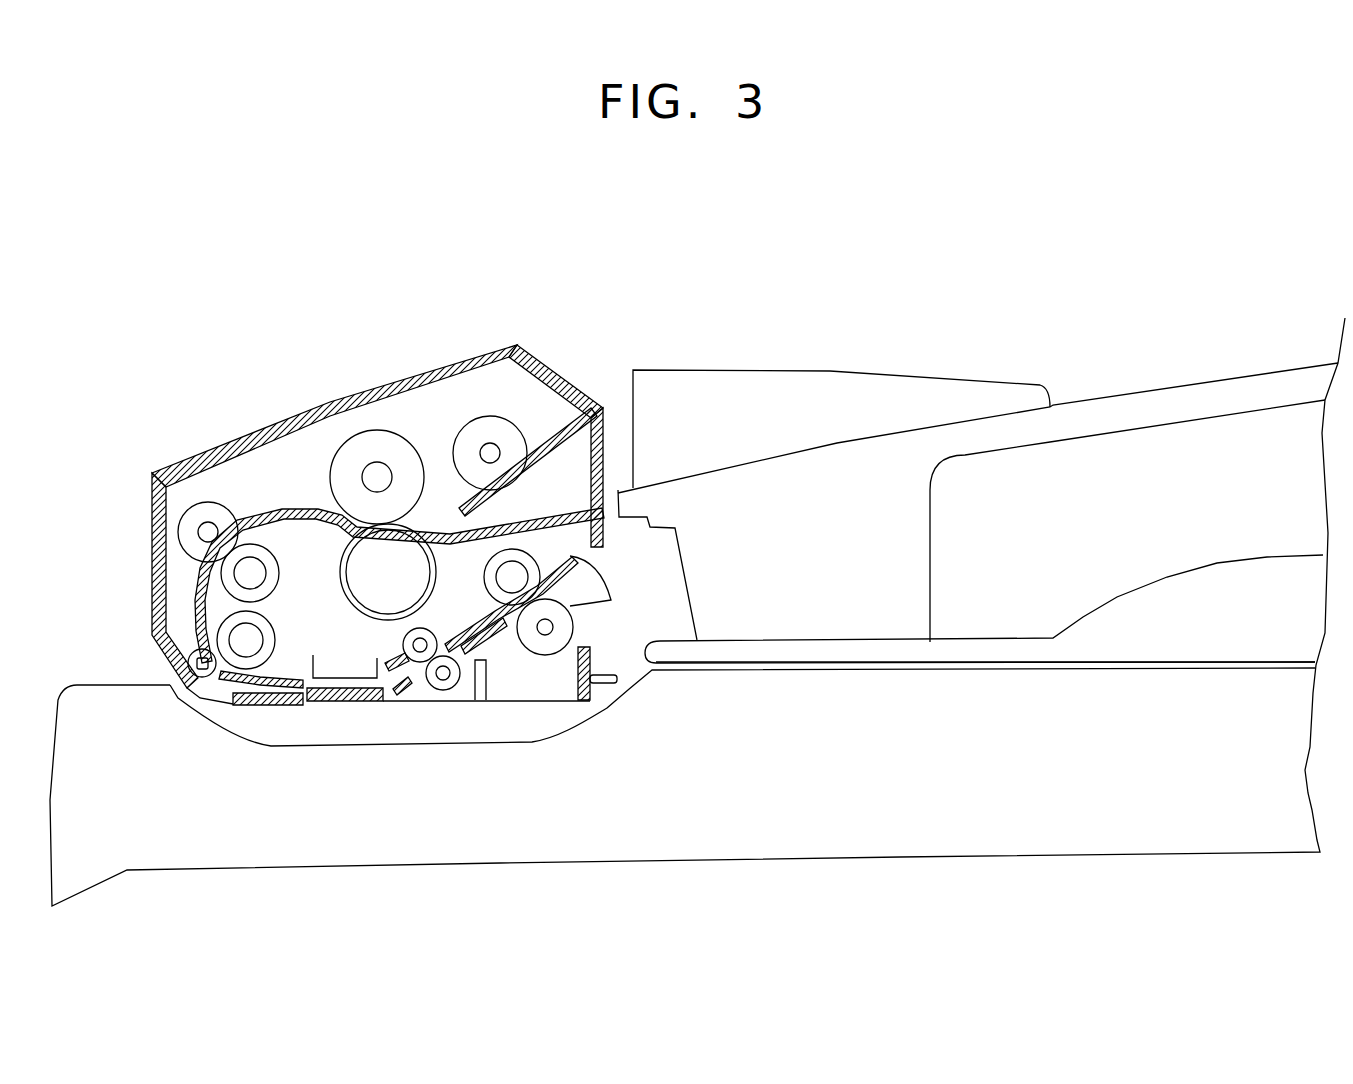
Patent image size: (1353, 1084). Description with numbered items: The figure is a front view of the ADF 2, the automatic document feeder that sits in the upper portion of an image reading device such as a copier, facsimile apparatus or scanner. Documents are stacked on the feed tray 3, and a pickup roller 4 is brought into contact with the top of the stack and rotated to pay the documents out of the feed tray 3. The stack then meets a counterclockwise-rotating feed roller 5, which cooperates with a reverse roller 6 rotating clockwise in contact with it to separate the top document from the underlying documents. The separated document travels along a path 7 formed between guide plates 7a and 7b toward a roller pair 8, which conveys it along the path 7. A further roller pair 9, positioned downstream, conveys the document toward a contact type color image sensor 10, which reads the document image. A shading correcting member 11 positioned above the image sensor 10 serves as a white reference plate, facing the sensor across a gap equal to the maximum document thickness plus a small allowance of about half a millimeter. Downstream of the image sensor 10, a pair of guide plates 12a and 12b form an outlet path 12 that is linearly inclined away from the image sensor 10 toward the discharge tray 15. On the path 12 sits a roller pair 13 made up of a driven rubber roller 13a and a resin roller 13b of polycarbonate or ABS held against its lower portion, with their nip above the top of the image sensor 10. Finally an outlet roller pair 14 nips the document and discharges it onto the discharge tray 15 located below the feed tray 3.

The ADF 2 is at (1027, 318).
The feed tray 3 is at (748, 463).
The pickup roller 4 is at (486, 428).
The feed roller 5 is at (372, 440).
The reverse roller 6 is at (413, 548).
The path 7 is at (316, 512).
The guide plate 7a is at (254, 546).
The guide plate 7b is at (293, 525).
The roller pair 8 is at (208, 502).
The roller pair 9 is at (210, 698).
The color image sensor 10 is at (326, 704).
The shading correcting member 11 is at (313, 660).
The outlet path 12 is at (506, 687).
The guide plate 12a is at (462, 634).
The guide plate 12b is at (497, 647).
The roller pair 13 is at (394, 713).
The rubber roller 13a is at (401, 642).
The resin roller 13b is at (452, 692).
The outlet roller pair 14 is at (611, 600).
The discharge tray 15 is at (876, 640).